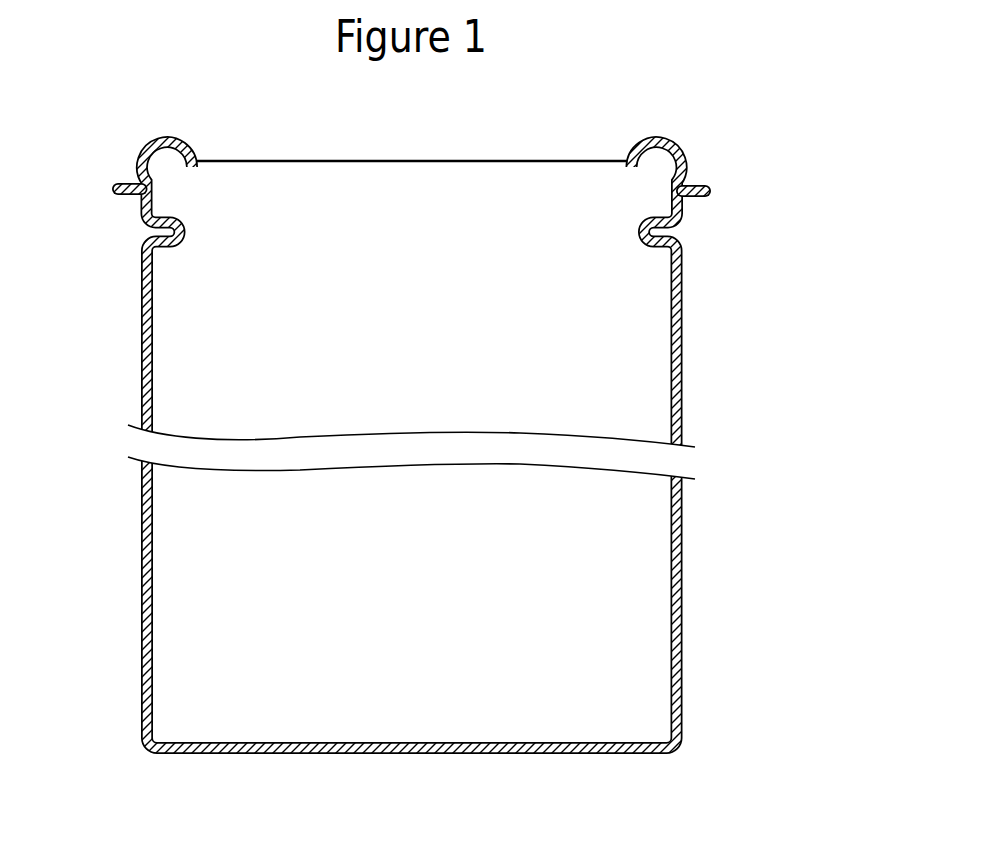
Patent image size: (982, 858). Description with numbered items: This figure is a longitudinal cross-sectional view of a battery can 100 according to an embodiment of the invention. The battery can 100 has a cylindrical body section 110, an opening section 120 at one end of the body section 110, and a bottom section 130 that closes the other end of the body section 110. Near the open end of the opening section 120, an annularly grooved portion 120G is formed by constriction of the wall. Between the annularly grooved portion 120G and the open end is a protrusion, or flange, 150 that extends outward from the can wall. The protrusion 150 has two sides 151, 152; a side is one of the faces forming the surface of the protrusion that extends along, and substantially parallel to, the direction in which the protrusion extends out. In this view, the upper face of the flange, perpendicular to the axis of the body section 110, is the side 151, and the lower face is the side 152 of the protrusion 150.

The battery can 100 is at (434, 141).
The cylindrical body section 110 is at (141, 332).
The opening section 120 is at (111, 155).
The annularly grooved portion 120G is at (685, 233).
The bottom section 130 is at (393, 755).
The protrusion (flange) 150 is at (754, 149).
The side of protrusion 151 is at (701, 184).
The side of protrusion 152 is at (702, 198).